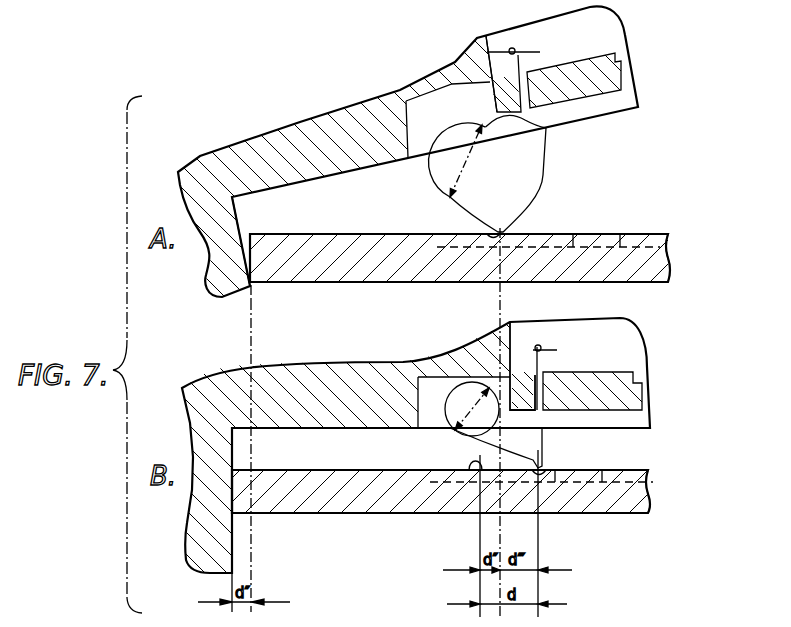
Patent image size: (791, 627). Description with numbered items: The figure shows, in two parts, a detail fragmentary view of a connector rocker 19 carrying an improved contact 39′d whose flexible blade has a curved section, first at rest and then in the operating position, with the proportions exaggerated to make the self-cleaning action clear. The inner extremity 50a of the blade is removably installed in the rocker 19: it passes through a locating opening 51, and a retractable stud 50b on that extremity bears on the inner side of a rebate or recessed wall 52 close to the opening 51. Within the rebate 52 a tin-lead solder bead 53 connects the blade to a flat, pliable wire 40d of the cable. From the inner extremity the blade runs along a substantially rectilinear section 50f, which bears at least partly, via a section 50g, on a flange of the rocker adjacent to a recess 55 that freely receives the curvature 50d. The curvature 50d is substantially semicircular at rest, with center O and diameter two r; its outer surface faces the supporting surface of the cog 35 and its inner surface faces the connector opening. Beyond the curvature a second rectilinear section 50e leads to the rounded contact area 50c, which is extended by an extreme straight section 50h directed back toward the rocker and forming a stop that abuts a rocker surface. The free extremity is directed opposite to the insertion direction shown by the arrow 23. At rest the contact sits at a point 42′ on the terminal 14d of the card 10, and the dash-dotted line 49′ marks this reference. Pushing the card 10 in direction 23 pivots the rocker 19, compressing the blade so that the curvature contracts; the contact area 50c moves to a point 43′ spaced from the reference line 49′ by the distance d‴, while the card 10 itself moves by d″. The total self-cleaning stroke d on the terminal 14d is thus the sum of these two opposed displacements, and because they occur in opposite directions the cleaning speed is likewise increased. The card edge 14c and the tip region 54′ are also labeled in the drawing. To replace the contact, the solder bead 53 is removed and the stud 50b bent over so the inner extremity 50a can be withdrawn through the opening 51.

In FIG. 7A, the card 10 is at (640, 282).
In FIG. 7B, the card 10 is at (641, 513).
In FIG. 7A, the edge of base plate 14c is at (652, 236).
In FIG. 7B, the edge of base plate 14c is at (632, 470).
In FIG. 7A, the terminal 14d is at (548, 238).
In FIG. 7B, the terminal 14d is at (418, 470).
In FIG. 7A, the rocker 19 is at (612, 28).
In FIG. 7B, the rocker 19 is at (638, 334).
In FIG. 7B, the arrow 23 is at (592, 558).
In FIG. 7A, the cog 35 is at (237, 220).
In FIG. 7B, the cog 35 is at (237, 456).
In FIG. 7A, the contact 39′d is at (481, 204).
In FIG. 7B, the wire 40d is at (485, 336).
In FIG. 7A, the point 42′ is at (490, 232).
In FIG. 7B, the point 42′ is at (473, 468).
In FIG. 7B, the point 43′ is at (552, 470).
In FIG. 7B, the reference line 49′ is at (503, 519).
In FIG. 7A, the inner extremity 50a is at (515, 75).
In FIG. 7A, the retractable stud 50b is at (503, 58).
In FIG. 7A, the contact area 50c is at (514, 208).
In FIG. 7A, the curvature 50d is at (428, 174).
In FIG. 7B, the curvature 50d is at (450, 432).
In FIG. 7A, the rectilinear section 50e is at (463, 210).
In FIG. 7A, the rectilinear section 50f is at (497, 130).
In FIG. 7A, the section 50g is at (540, 118).
In FIG. 7A, the extreme straight section 50h is at (510, 226).
In FIG. 7B, the extreme straight section 50h is at (543, 441).
In FIG. 7B, the locating opening 51 is at (546, 411).
In FIG. 7B, the rebate 52 is at (636, 362).
In FIG. 7B, the solder bead 53 is at (542, 347).
In FIG. 7B, the hook tip 54′ is at (518, 441).
In FIG. 7A, the recess 55 is at (410, 125).